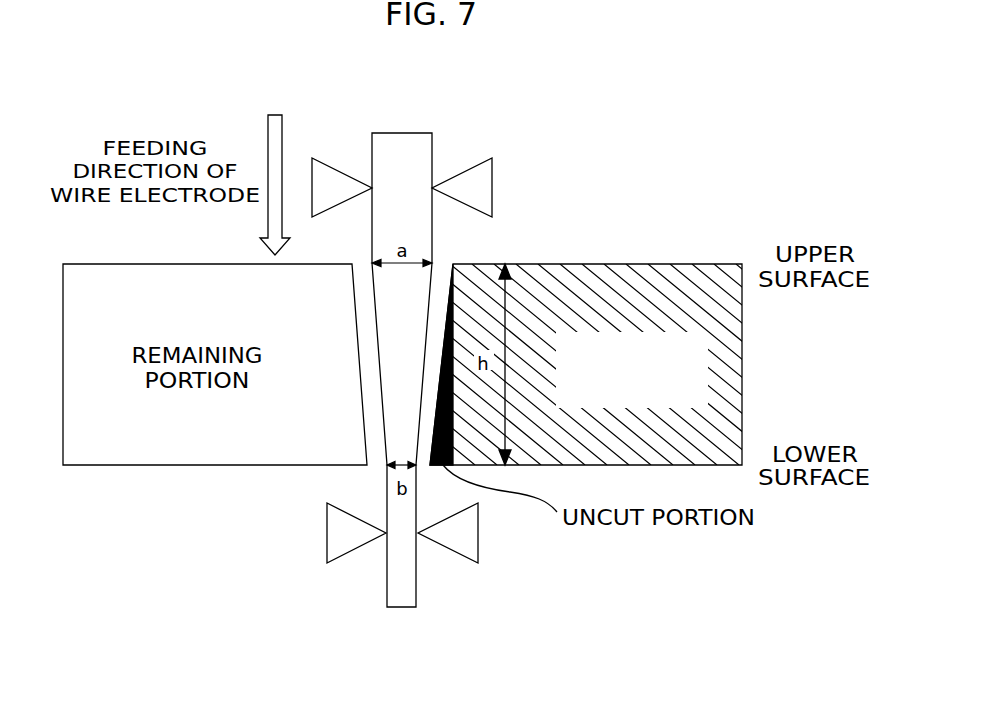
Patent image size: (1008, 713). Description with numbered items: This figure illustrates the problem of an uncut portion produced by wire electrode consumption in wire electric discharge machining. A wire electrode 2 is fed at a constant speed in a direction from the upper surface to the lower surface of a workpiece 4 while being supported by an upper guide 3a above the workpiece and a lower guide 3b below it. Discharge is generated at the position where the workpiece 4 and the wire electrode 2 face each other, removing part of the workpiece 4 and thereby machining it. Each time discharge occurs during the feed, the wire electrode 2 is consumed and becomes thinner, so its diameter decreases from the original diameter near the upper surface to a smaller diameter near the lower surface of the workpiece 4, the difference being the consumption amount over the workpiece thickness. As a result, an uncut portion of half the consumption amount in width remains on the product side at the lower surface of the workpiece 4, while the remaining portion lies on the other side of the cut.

The wire electrode 2 is at (398, 133).
The upper guide 3a is at (493, 187).
The lower guide 3b is at (479, 533).
The workpiece 4 is at (653, 264).